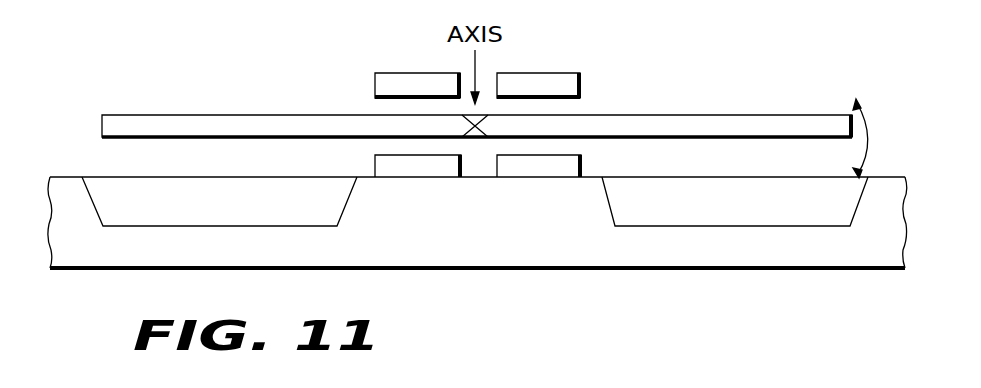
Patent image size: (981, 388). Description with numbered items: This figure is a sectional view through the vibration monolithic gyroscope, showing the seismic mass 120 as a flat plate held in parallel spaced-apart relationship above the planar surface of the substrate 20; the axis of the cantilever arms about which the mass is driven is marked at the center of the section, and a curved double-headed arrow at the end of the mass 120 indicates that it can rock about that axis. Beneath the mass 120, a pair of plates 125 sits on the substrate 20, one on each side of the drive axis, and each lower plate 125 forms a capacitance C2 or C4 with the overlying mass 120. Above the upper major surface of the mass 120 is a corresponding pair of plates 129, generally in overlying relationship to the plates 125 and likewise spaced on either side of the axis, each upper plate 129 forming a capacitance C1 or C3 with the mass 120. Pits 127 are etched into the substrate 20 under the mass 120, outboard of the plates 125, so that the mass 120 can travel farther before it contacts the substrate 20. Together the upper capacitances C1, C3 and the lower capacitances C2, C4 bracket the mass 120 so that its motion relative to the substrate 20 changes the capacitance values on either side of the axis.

The substrate 20 is at (489, 245).
The seismic mass 120 is at (743, 113).
The plates 125 is at (412, 170).
The pits 127 is at (238, 212).
The plates 129 is at (402, 72).
The capacitance C1 is at (378, 107).
The capacitance C2 is at (373, 147).
The capacitance C3 is at (580, 107).
The capacitance C4 is at (577, 147).